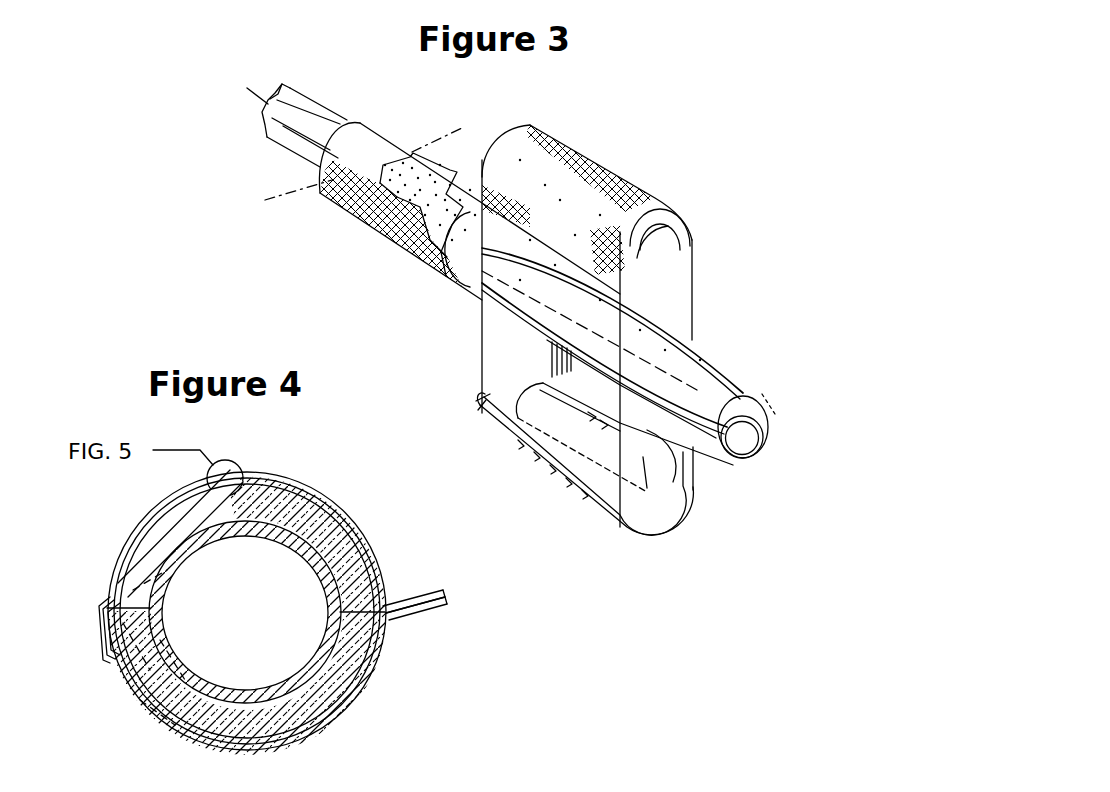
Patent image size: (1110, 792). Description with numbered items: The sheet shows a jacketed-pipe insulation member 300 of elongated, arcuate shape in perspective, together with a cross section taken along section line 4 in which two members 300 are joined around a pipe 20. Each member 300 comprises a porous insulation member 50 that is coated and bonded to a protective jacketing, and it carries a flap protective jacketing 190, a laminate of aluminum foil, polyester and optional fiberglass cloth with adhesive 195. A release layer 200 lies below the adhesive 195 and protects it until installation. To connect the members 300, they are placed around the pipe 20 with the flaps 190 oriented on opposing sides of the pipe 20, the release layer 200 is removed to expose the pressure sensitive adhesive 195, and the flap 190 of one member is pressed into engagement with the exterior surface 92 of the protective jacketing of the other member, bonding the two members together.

In FIG. 3, the jacketed-pipe insulation member 300 is at (616, 160).
In FIG. 3, the insulation member 50 is at (660, 206).
In FIG. 4, the insulation member 50 is at (379, 662).
In FIG. 3, the flap protective jacketing 190 is at (655, 283).
In FIG. 4, the flap protective jacketing 190 is at (424, 636).
In FIG. 3, the adhesive 195 is at (697, 455).
In FIG. 4, the adhesive 195 is at (441, 593).
In FIG. 4, the pipe 20 is at (335, 603).
In FIG. 4, the exterior surface 92 is at (417, 578).
In FIG. 4, the release layer 200 is at (437, 583).
In FIG. 3, the section line 4- 4 is at (277, 215).